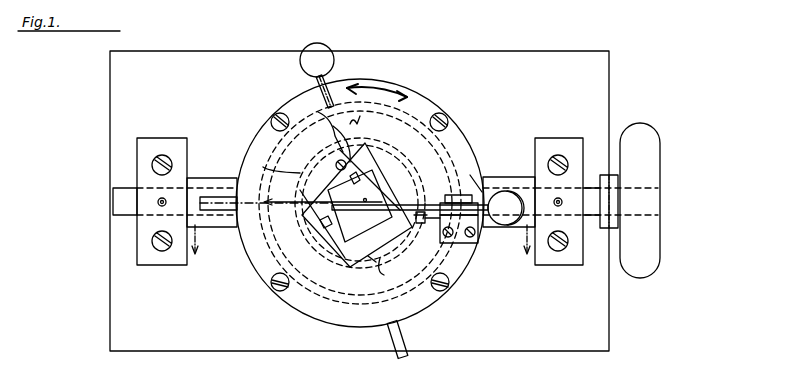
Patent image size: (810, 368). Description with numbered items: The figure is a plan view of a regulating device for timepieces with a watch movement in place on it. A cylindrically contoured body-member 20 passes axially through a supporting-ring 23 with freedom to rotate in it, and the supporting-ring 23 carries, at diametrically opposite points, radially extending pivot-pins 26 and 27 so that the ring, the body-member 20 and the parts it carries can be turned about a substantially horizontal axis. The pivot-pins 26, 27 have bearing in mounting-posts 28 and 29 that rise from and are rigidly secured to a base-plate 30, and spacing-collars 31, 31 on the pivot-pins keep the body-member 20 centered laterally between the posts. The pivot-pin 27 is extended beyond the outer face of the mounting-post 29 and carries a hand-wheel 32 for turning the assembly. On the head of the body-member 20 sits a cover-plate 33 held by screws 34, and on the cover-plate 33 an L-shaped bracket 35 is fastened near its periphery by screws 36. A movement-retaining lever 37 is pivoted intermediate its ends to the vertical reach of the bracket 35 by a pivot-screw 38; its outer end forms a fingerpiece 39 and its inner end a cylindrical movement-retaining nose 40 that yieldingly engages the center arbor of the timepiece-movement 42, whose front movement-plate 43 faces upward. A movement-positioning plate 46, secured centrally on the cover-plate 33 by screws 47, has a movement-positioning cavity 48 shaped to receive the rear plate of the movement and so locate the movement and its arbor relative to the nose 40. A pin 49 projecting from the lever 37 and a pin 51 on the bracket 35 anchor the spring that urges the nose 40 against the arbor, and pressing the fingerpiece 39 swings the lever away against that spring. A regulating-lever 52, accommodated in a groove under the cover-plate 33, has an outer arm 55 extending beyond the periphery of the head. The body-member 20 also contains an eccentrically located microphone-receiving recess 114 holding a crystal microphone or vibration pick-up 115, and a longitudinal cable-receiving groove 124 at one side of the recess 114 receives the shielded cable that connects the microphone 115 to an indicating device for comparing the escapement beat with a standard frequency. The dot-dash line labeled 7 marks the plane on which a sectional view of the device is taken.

The section line 7 is at (360, 255).
The body-member 20 is at (335, 302).
The supporting-ring 23 is at (313, 287).
The pivot-pin 26 is at (113, 203).
The pivot-pin 27 is at (593, 218).
The mounting-post 28 is at (152, 266).
The mounting-post 29 is at (564, 266).
The base-plate 30 is at (610, 332).
The spacing-collars 31 is at (212, 178).
The hand-wheel 32 is at (660, 266).
The cover-plate 33 is at (326, 324).
The screws 34 is at (442, 114).
The L-shaped bracket 35 is at (458, 212).
The screws 36 is at (452, 243).
The movement-retaining lever 37 is at (436, 204).
The pivot-screw 38 is at (460, 196).
The fingerpiece 39 is at (504, 191).
The movement-retaining nose 40 is at (350, 216).
The timepiece-movement 42 is at (357, 205).
The front movement-plate 43 is at (306, 194).
The movement-positioning plate 46 is at (370, 262).
The screws 47 is at (333, 128).
The movement-positioning cavity 48 is at (370, 180).
The pin 49 is at (420, 224).
The pin 51 is at (433, 222).
The regulating-lever 52 is at (219, 212).
The outer arm 55 is at (232, 178).
The microphone-receiving recess 114 is at (316, 125).
The crystal microphone 115 is at (273, 161).
The cable-receiving groove 124 is at (344, 87).